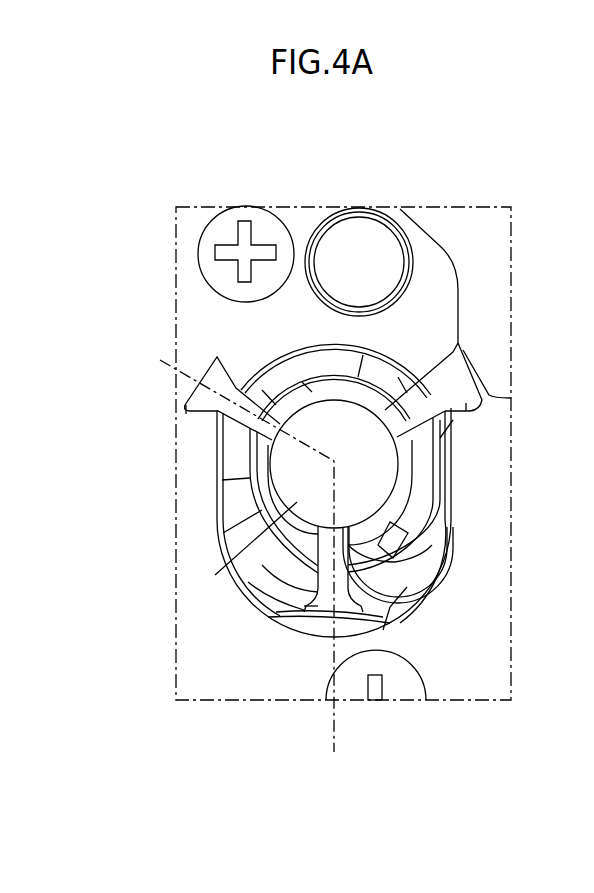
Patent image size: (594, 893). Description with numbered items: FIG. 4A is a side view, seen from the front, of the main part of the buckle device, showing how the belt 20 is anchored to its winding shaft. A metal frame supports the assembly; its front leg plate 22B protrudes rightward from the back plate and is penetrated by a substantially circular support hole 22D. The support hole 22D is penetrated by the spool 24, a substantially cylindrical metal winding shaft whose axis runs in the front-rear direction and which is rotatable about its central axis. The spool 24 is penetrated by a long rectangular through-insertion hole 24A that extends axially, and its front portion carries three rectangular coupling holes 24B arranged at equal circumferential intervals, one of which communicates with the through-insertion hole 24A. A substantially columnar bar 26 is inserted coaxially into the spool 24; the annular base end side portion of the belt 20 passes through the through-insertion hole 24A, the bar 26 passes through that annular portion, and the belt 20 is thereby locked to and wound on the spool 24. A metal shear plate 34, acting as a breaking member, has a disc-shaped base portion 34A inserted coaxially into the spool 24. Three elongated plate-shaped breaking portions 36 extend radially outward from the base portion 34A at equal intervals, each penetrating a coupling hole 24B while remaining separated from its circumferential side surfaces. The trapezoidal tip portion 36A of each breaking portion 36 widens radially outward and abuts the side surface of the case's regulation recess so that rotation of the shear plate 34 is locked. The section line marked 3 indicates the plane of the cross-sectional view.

The belt 20 is at (382, 607).
The leg plate 22B is at (188, 300).
The support hole 22D is at (222, 527).
The spool 24 is at (455, 524).
The through-insertion hole 24A is at (505, 598).
The coupling hole 24B is at (237, 477).
The bar 26 is at (324, 388).
The shear plate 34 is at (290, 380).
The base portion 34A is at (240, 545).
The breaking portion 36 is at (262, 378).
The tip portion 36A is at (186, 414).
The section line III-III 3 is at (161, 356).